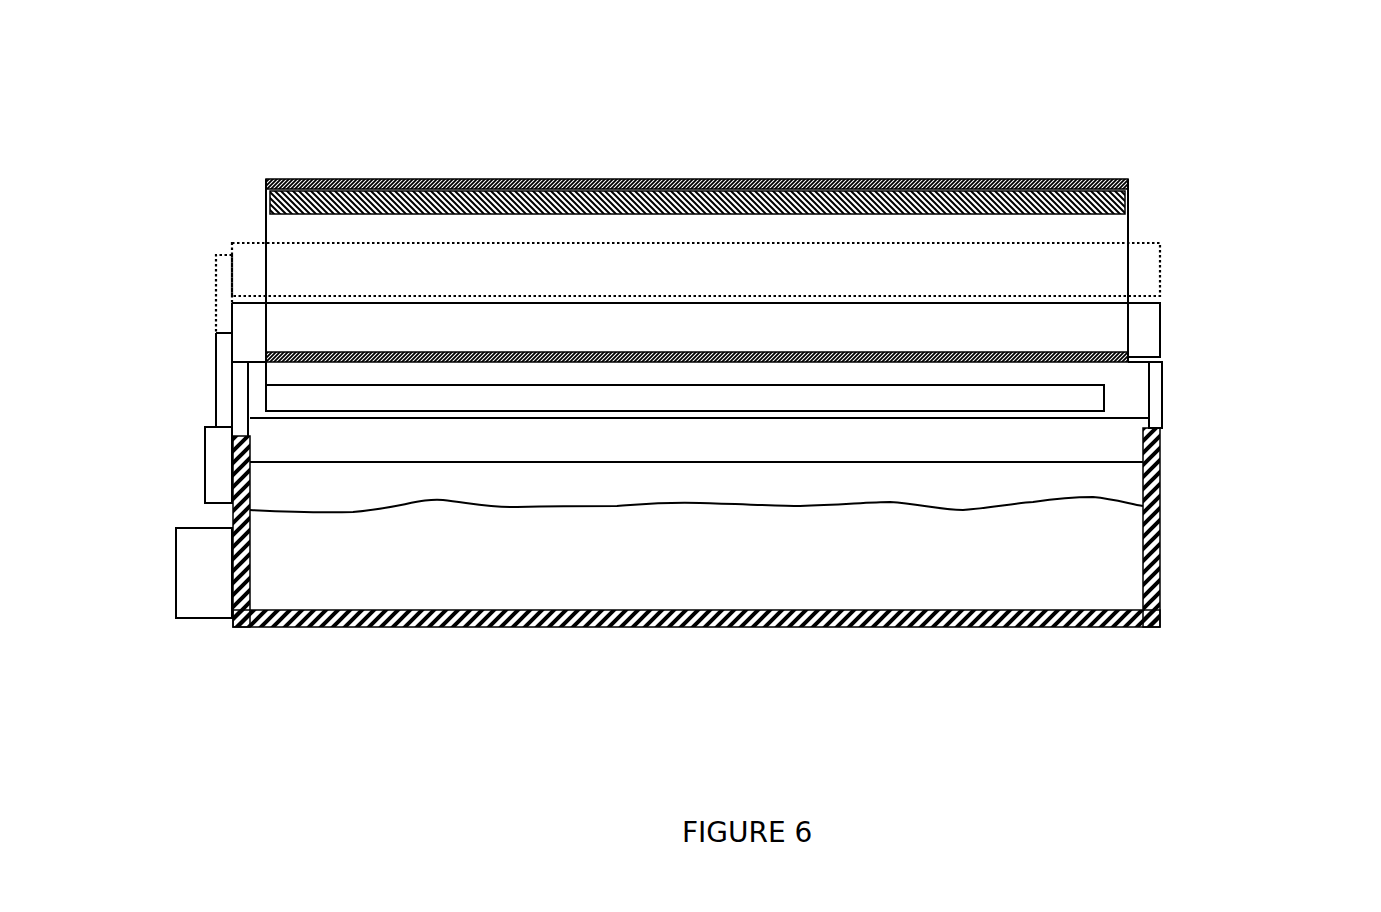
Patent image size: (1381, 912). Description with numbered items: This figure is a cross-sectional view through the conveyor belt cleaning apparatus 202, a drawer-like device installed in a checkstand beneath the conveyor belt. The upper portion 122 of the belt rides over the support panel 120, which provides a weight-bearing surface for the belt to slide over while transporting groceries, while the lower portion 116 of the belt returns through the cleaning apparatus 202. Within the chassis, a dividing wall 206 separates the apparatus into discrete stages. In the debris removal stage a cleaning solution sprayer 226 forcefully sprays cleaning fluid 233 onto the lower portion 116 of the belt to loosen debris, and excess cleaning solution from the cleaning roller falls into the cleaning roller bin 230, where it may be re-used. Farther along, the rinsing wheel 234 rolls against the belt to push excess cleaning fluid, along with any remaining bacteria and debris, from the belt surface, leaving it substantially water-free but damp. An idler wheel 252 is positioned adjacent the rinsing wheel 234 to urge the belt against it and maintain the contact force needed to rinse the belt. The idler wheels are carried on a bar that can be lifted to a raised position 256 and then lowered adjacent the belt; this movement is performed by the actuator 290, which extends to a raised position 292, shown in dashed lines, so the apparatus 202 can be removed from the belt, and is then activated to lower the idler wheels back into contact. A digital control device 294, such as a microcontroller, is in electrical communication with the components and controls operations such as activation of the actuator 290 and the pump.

The conveyor belt cleaning apparatus 202 is at (331, 109).
The lower portion of conveyor belt 116 is at (427, 355).
The support panel 120 is at (605, 200).
The upper portion of conveyor belt 122 is at (877, 180).
The raised position of bar 256 is at (248, 270).
The raised position of actuator 292 is at (228, 297).
The idler wheel 252 is at (1147, 340).
The cleaning solution sprayer 226 is at (278, 400).
The rinsing wheel 234 is at (1132, 390).
The dividing wall 206 is at (1100, 432).
The cleaning roller bin 230 is at (1122, 472).
The cleaning fluid 233 is at (318, 532).
The actuator 290 is at (186, 477).
The digital control device 294 is at (175, 596).